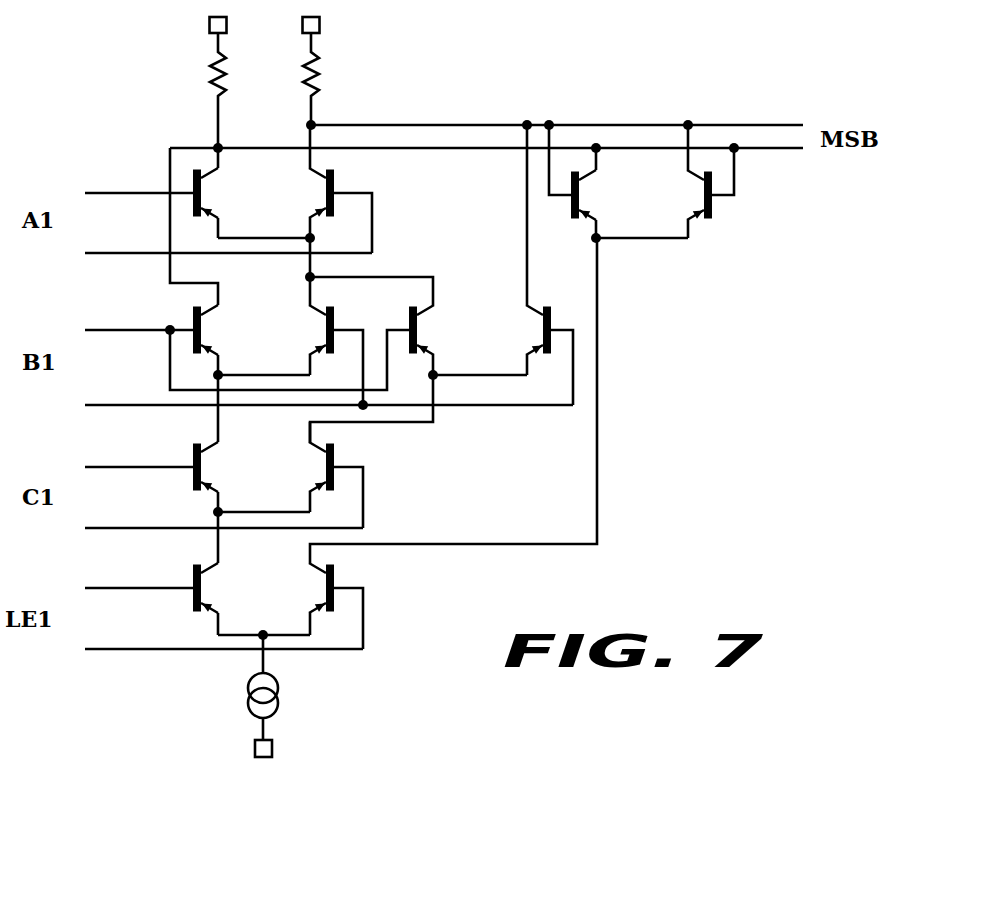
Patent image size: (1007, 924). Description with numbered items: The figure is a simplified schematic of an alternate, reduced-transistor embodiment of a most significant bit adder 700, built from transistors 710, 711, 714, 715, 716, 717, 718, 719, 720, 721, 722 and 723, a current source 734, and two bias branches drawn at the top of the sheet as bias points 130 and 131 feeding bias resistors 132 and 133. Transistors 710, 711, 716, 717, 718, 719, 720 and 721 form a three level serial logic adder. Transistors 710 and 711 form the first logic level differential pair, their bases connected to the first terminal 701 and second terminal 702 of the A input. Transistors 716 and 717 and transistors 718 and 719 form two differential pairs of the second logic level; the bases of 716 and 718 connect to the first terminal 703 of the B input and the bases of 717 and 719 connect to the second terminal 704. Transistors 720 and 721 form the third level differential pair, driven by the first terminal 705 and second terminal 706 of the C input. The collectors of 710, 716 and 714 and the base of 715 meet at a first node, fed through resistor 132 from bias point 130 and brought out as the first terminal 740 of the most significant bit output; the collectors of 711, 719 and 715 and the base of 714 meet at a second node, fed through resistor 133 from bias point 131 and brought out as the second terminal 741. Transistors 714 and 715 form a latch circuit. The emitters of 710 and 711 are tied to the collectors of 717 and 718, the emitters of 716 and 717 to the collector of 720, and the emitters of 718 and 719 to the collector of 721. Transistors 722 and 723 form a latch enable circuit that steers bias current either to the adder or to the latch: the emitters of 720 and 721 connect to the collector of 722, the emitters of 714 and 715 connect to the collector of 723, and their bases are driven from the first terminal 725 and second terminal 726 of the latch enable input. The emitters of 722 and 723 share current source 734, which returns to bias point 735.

The first bias terminal 130 is at (208, 26).
The second bias terminal 131 is at (320, 25).
The first resistor 132 is at (207, 71).
The second resistor 133 is at (319, 73).
The MSB adder 700 is at (742, 605).
The first terminal of the A1 input 701 is at (113, 191).
The second terminal of the A1 input 702 is at (113, 252).
The first terminal of the B1 input 703 is at (113, 329).
The second terminal of the B1 input 704 is at (113, 404).
The first terminal of the C1 input 705 is at (113, 465).
The second terminal of the C1 input 706 is at (113, 526).
The transistor 710 is at (216, 203).
The transistor 711 is at (312, 184).
The transistor 714 is at (596, 205).
The transistor 715 is at (688, 187).
The transistor 716 is at (216, 338).
The transistor 717 is at (312, 321).
The transistor 718 is at (434, 340).
The transistor 719 is at (527, 321).
The transistor 720 is at (216, 477).
The transistor 721 is at (312, 459).
The transistor 722 is at (216, 598).
The transistor 723 is at (312, 583).
The first terminal of the LE1 input 725 is at (113, 586).
The second terminal of the LE1 input 726 is at (113, 647).
The current source 734 is at (246, 685).
The bias point 735 is at (253, 749).
The first terminal of the MSB output 740 is at (783, 124).
The second terminal of the MSB output 741 is at (782, 150).